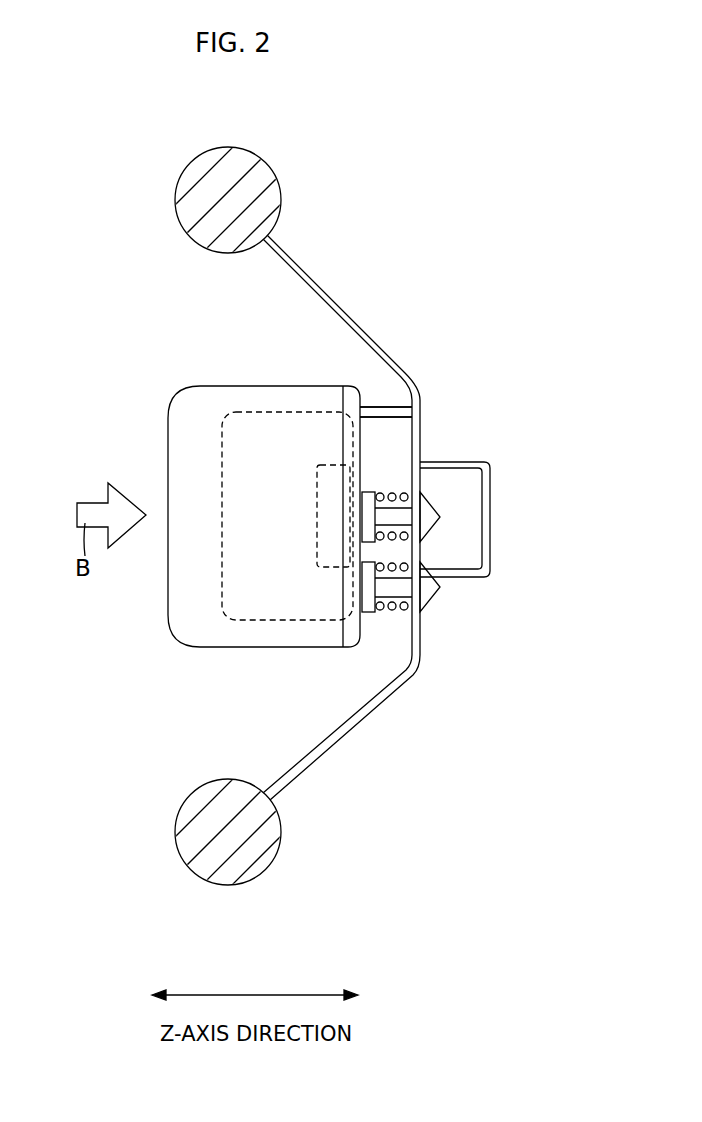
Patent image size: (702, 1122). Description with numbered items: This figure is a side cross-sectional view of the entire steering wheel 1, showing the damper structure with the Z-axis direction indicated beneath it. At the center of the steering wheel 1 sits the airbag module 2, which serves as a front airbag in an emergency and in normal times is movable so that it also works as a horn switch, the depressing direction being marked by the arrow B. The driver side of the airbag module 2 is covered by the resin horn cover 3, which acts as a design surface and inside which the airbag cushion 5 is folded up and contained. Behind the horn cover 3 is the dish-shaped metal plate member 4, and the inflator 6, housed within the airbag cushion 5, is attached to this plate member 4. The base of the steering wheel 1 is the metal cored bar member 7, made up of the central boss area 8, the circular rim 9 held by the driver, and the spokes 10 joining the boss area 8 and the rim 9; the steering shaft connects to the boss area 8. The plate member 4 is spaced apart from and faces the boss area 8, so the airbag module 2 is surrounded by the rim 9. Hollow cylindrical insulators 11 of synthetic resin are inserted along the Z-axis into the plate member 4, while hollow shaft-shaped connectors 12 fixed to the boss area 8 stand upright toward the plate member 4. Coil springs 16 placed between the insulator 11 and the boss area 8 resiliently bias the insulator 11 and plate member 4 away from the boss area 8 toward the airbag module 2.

The steering wheel 1 is at (388, 166).
The airbag module 2 is at (160, 655).
The horn cover 3 is at (168, 438).
The plate member 4 is at (365, 382).
The airbag cushion 5 is at (240, 412).
The inflator 6 is at (327, 465).
The cored bar member 7 is at (423, 405).
The boss area 8 is at (418, 431).
The rim 9 is at (250, 162).
The spokes 10 is at (322, 277).
The insulator 11 is at (367, 490).
The connectors 12 is at (400, 517).
The coil springs 16 is at (391, 493).